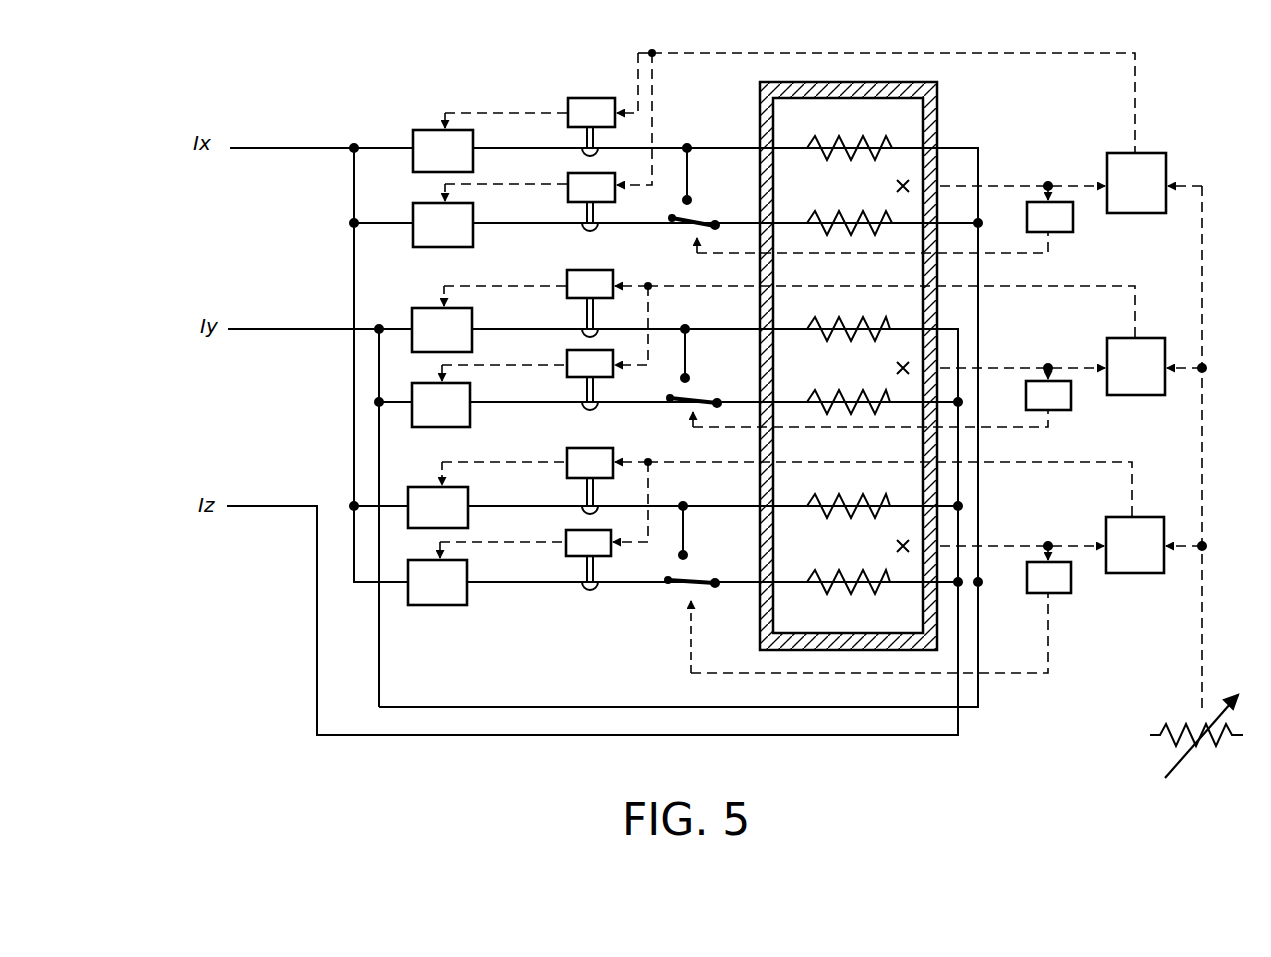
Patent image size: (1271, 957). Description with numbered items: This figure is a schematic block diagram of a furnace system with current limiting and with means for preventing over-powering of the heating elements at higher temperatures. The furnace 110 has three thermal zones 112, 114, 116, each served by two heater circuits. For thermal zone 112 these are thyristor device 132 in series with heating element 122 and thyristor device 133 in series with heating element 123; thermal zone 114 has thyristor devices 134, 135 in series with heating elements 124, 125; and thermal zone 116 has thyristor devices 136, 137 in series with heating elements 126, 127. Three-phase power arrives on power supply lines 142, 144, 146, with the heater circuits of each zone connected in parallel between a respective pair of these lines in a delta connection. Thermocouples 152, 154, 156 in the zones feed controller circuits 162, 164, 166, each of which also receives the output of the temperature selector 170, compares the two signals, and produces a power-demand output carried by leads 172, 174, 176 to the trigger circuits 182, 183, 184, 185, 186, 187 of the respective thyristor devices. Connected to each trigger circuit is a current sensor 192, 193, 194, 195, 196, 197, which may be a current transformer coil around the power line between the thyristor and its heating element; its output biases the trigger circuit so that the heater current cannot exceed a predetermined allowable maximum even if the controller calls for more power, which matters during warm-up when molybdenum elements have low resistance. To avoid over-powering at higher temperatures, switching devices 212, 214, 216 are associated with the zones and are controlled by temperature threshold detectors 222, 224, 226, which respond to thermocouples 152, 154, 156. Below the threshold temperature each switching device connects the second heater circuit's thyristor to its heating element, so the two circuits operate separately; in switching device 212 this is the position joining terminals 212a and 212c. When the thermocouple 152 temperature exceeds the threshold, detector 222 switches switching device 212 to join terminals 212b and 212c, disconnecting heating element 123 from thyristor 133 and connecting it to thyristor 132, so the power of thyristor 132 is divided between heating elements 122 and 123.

The furnace 110 is at (937, 94).
The thermal zone 112 is at (857, 196).
The thermal zone 114 is at (857, 379).
The thermal zone 116 is at (847, 561).
The heating element 122 is at (824, 146).
The heating element 123 is at (826, 212).
The heating element 124 is at (818, 340).
The heating element 125 is at (824, 393).
The heating element 126 is at (818, 517).
The heating element 127 is at (816, 573).
The thyristor device 132 is at (428, 127).
The thyristor device 133 is at (423, 202).
The thyristor device 134 is at (421, 308).
The thyristor device 135 is at (423, 390).
The thyristor device 136 is at (425, 489).
The thyristor device 137 is at (433, 605).
The power supply line 142 is at (292, 137).
The power supply line 144 is at (288, 319).
The power supply line 146 is at (262, 506).
The thermocouple 152 is at (898, 186).
The thermocouple 154 is at (896, 368).
The thermocouple 156 is at (892, 546).
The controller circuit 162 is at (1164, 154).
The controller circuit 164 is at (1160, 338).
The controller circuit 166 is at (1147, 517).
The temperature selector 170 is at (1220, 744).
The lead 172 is at (745, 53).
The lead 174 is at (668, 285).
The lead 176 is at (668, 463).
The trigger circuit 182 is at (585, 98).
The trigger circuit 183 is at (568, 192).
The trigger circuit 184 is at (567, 272).
The trigger circuit 185 is at (567, 356).
The trigger circuit 186 is at (567, 458).
The trigger circuit 187 is at (566, 536).
The current sensor 192 is at (582, 145).
The current sensor 193 is at (582, 228).
The current sensor 194 is at (579, 328).
The current sensor 195 is at (579, 401).
The current sensor 196 is at (576, 505).
The current sensor 197 is at (584, 591).
The switching device 212 is at (700, 218).
The terminal 212a is at (676, 232).
The terminal 212b is at (692, 197).
The terminal 212c is at (713, 228).
The switching device 214 is at (692, 393).
The switching device 216 is at (692, 570).
The temperature threshold detector 222 is at (1062, 235).
The temperature threshold detector 224 is at (1060, 413).
The temperature threshold detector 226 is at (1060, 596).